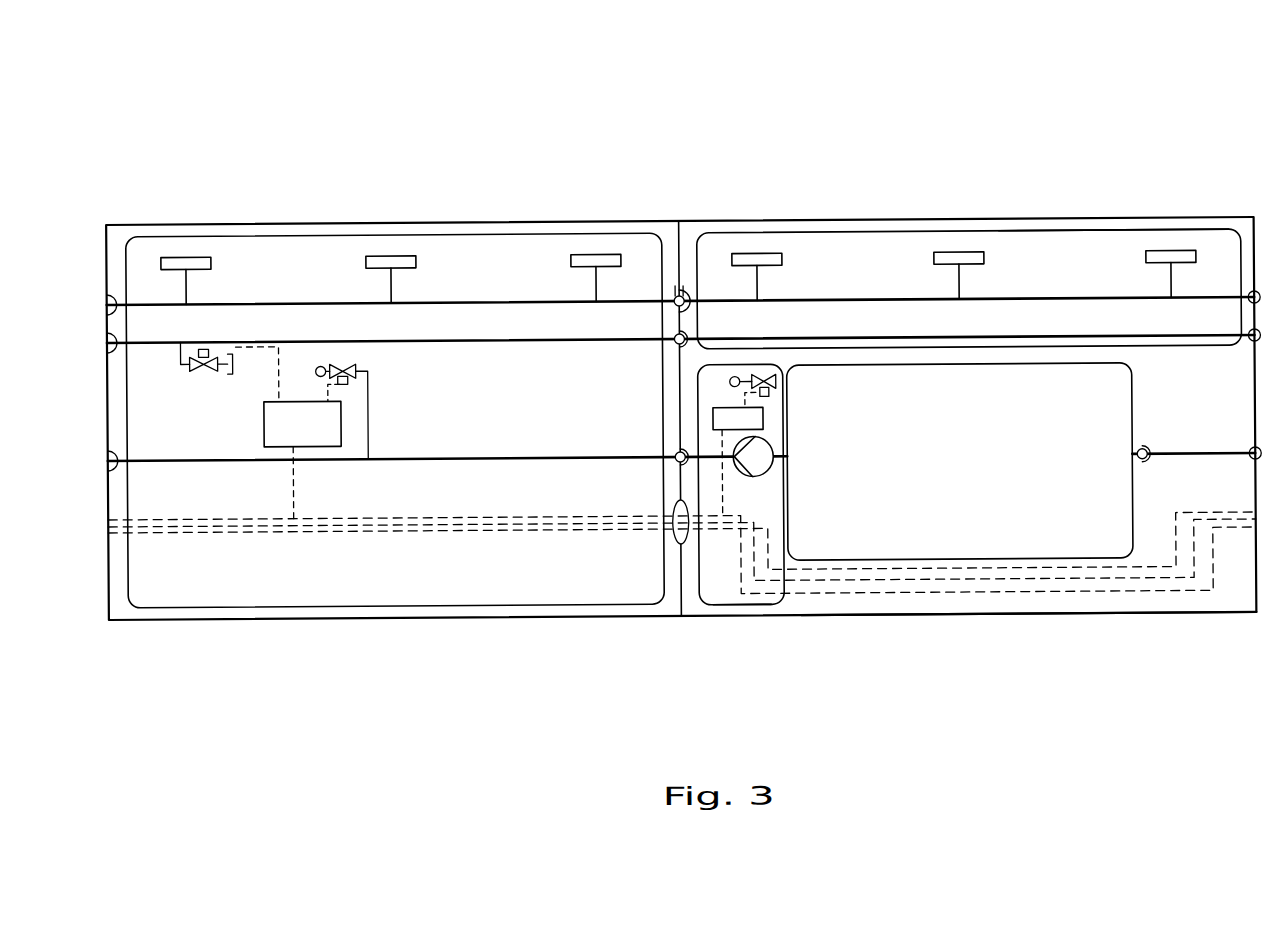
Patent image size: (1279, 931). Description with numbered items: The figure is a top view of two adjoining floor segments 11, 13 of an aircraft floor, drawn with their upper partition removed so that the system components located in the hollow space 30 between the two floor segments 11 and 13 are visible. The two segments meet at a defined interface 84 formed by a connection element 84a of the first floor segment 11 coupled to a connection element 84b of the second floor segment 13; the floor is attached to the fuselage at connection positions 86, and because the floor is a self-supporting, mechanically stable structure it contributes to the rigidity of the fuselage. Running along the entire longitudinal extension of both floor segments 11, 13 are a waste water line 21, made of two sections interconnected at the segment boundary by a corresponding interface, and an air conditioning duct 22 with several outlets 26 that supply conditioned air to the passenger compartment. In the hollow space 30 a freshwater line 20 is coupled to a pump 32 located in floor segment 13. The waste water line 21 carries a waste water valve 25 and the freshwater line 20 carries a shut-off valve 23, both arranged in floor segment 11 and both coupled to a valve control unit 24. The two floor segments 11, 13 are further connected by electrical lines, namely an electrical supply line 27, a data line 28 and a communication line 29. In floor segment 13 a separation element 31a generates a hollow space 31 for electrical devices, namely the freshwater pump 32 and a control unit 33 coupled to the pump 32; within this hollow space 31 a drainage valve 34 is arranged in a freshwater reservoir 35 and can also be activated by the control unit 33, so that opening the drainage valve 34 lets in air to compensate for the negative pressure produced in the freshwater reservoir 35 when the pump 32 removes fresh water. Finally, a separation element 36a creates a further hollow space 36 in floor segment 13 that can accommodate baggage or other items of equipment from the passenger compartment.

The floor segment 11 is at (210, 618).
The floor segment 13 is at (945, 618).
The freshwater line 20 is at (452, 461).
The waste water line 21 is at (487, 344).
The air conditioning duct 22 is at (541, 306).
The shut-off valve 23 is at (353, 377).
The valve control unit 24 is at (330, 432).
The waste water valve 25 is at (213, 373).
The outlets 26 is at (190, 251).
The electrical supply line 27 is at (467, 533).
The data line 28 is at (497, 527).
The communication line 29 is at (512, 520).
The hollow space 30 is at (356, 607).
The hollow space 31 is at (698, 560).
The separation element 31a is at (741, 609).
The pump 32 is at (764, 473).
The control unit 33 is at (715, 422).
The drainage valve 34 is at (762, 382).
The freshwater reservoir 35 is at (1045, 534).
The hollow space 36 is at (1025, 250).
The separation element 36a is at (1083, 235).
The interface 84 is at (697, 209).
The connection element 84a is at (676, 296).
The connection element 84b is at (684, 296).
The connection position 86 is at (676, 548).